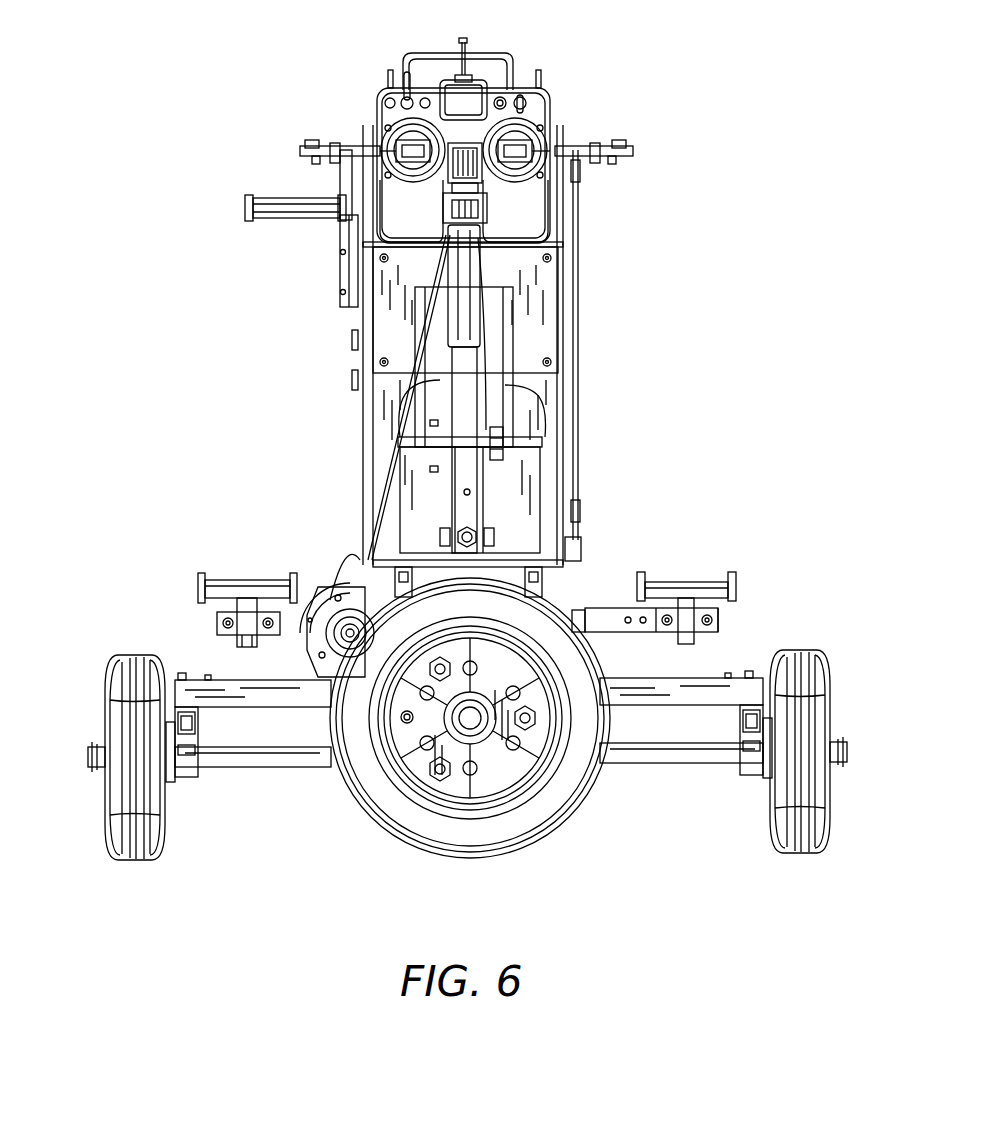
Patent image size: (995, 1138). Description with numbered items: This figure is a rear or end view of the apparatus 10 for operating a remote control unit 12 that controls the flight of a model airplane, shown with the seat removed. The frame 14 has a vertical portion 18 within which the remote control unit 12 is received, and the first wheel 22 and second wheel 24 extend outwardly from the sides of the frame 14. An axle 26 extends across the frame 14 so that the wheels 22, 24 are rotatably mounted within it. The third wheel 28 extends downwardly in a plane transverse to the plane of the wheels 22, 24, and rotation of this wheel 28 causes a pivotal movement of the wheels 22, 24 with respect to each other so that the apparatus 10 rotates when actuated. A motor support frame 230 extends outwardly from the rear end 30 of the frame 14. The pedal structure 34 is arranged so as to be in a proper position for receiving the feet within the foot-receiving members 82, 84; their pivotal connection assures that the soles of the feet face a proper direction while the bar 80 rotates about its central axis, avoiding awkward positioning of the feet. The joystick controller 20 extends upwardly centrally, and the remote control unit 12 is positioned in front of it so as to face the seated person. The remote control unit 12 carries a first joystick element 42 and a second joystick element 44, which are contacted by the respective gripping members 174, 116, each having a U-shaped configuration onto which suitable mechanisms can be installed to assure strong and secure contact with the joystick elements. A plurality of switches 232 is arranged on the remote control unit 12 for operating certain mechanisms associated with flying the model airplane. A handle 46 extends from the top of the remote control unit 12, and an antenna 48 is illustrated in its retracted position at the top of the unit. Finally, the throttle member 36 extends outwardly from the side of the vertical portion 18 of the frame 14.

The apparatus 10 is at (628, 405).
The remote control unit 12 is at (392, 95).
The frame 14 is at (222, 682).
The vertical portion 18 is at (550, 290).
The joystick controller 20 is at (455, 312).
The first wheel 22 is at (810, 652).
The second wheel 24 is at (120, 656).
The axle 26 is at (277, 765).
The third wheel 28 is at (560, 802).
The rear end 30 is at (316, 656).
The pedal structure 34 is at (598, 612).
The throttle member 36 is at (288, 218).
The first joystick element 42 is at (532, 148).
The second joystick element 44 is at (405, 130).
The handle 46 is at (478, 50).
The antenna 48 is at (461, 42).
The bar 80 is at (632, 625).
The foot-receiving member 82 is at (690, 585).
The foot-receiving member 84 is at (225, 585).
The gripping member 116 is at (396, 150).
The gripping member 174 is at (520, 140).
The motor support frame 230 is at (349, 605).
The switches 232 is at (504, 98).